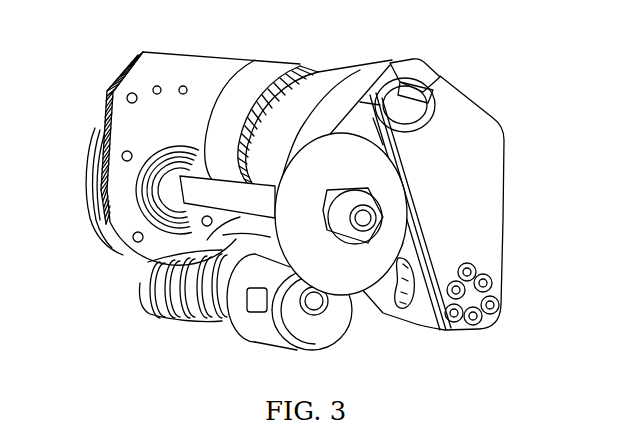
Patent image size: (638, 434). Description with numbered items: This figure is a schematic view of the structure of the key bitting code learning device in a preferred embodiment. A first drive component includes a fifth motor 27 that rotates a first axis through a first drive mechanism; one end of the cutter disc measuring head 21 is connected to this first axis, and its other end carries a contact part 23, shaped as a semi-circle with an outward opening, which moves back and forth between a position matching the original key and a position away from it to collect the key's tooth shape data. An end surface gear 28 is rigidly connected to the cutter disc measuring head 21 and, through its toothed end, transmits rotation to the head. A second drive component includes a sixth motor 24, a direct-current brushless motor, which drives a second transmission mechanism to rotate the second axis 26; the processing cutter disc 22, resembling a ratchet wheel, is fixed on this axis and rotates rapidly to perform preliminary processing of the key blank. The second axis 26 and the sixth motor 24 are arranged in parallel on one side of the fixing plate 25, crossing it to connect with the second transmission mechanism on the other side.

The cutter disc measuring head 21 is at (467, 150).
The processing cutter disc 22 is at (347, 277).
The contact part 23 is at (417, 97).
The sixth motor 24 is at (293, 97).
The fixing plate 25 is at (155, 75).
The second axis 26 is at (197, 190).
The fifth motor 27 is at (257, 320).
The end surface gear 28 is at (407, 297).